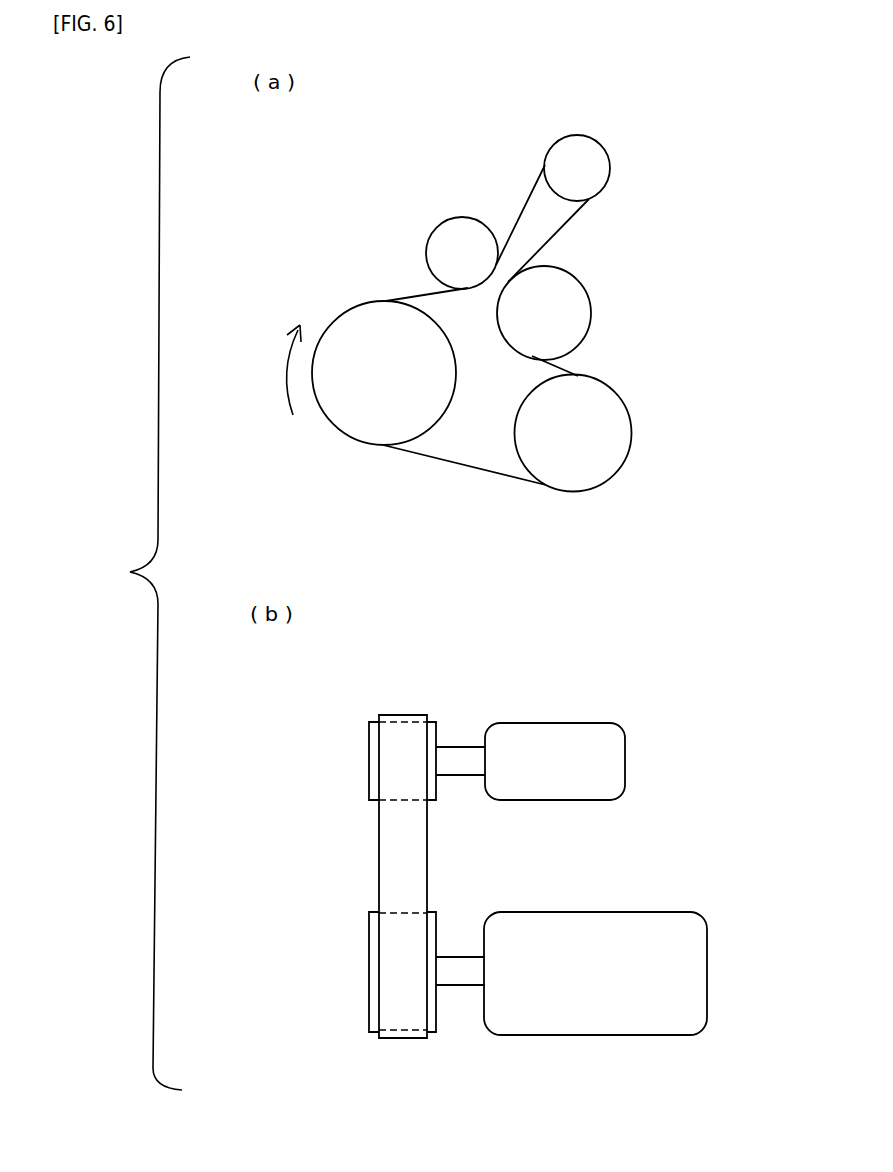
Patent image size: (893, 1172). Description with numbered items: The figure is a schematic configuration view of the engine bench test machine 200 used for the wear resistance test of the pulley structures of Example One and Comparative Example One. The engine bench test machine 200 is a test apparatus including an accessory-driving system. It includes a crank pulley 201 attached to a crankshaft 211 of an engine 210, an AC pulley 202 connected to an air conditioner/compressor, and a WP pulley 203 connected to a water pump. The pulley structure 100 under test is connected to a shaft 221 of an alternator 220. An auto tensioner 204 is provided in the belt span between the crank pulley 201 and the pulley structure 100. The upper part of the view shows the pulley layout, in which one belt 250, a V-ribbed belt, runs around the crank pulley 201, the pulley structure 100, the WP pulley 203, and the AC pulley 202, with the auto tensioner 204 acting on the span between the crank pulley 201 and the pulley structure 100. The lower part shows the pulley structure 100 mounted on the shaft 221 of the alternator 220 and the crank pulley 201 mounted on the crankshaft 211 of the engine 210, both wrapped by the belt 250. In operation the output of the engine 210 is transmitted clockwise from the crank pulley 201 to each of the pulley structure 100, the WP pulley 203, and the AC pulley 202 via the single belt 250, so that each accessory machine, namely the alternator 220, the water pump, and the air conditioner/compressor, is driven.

The pulley structure 100 is at (597, 179).
The engine bench test machine 200 is at (684, 137).
The crank pulley 201 is at (405, 387).
The AC pulley 202 is at (593, 447).
The WP pulley 203 is at (563, 327).
The auto tensioner 204 is at (482, 266).
The belt 250 is at (568, 224).
The engine 210 is at (627, 920).
The crankshaft 211 is at (452, 965).
The alternator 220 is at (553, 728).
The shaft 221 is at (460, 747).